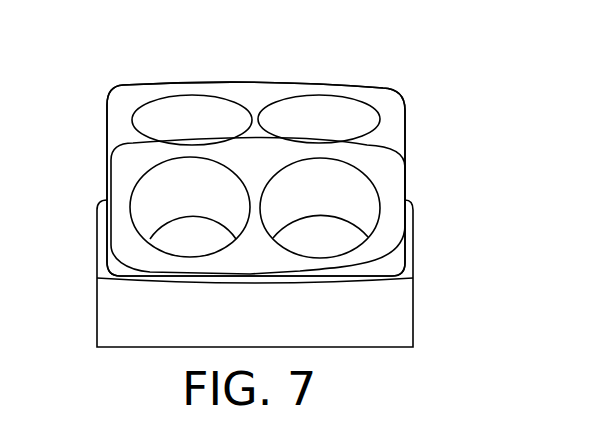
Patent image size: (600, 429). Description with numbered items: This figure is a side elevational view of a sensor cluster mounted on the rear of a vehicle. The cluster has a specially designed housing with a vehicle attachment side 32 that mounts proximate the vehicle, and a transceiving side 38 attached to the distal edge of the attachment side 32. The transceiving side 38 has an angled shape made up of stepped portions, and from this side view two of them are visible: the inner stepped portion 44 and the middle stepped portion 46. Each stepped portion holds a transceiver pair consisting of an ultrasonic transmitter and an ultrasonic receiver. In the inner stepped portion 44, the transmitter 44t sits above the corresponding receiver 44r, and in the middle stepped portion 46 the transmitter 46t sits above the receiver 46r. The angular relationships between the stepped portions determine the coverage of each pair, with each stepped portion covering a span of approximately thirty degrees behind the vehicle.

The vehicle attachment side 32 is at (388, 322).
The transceiving side 38 is at (252, 66).
The inner stepped portion 44 is at (390, 178).
The ultrasonic transmitter 44t is at (148, 188).
The ultrasonic receiver 44r is at (358, 210).
The middle stepped portion 46 is at (393, 112).
The ultrasonic transmitter 46t is at (170, 122).
The ultrasonic receiver 46r is at (347, 117).